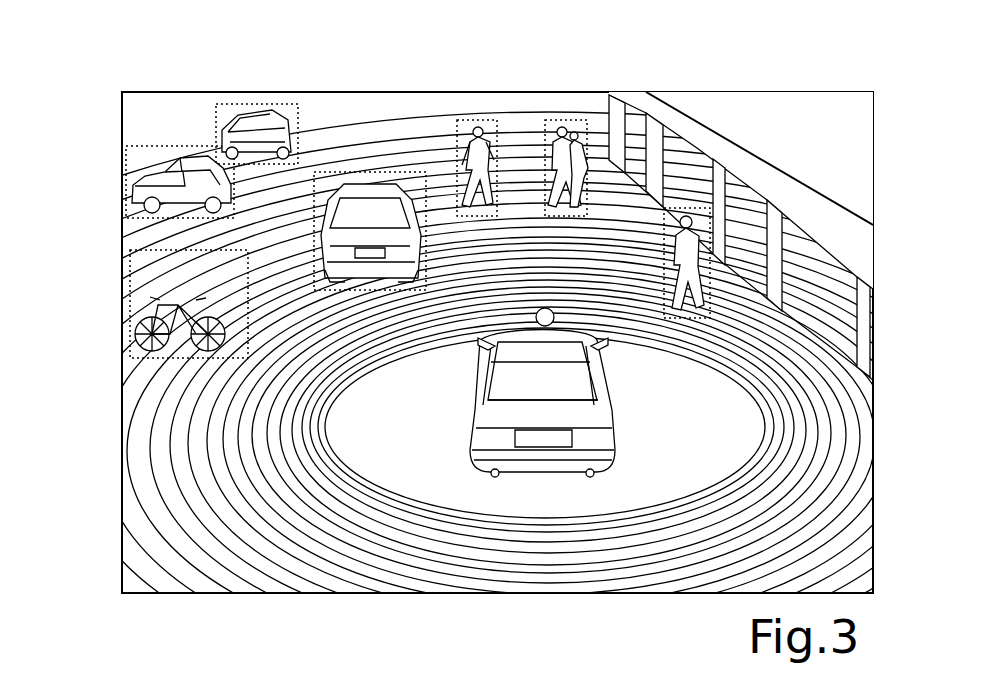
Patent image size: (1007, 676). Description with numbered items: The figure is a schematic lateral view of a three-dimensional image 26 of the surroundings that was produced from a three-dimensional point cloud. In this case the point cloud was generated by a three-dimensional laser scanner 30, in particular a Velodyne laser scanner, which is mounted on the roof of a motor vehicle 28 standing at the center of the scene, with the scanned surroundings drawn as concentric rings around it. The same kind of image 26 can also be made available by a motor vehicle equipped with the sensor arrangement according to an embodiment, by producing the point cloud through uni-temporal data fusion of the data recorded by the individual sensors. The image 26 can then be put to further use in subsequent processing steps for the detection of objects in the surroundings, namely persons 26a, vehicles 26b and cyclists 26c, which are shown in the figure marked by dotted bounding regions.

The three-dimensional image 26 is at (498, 112).
The persons 26a is at (486, 180).
The vehicles 26b is at (162, 150).
The cyclists 26c is at (130, 300).
The motor vehicle 28 is at (612, 412).
The 3D laser scanner 30 is at (480, 342).